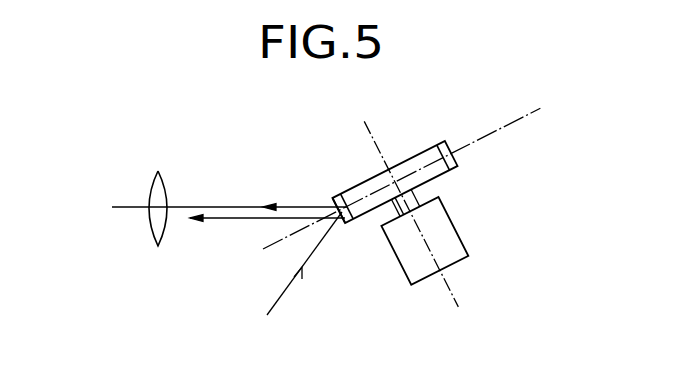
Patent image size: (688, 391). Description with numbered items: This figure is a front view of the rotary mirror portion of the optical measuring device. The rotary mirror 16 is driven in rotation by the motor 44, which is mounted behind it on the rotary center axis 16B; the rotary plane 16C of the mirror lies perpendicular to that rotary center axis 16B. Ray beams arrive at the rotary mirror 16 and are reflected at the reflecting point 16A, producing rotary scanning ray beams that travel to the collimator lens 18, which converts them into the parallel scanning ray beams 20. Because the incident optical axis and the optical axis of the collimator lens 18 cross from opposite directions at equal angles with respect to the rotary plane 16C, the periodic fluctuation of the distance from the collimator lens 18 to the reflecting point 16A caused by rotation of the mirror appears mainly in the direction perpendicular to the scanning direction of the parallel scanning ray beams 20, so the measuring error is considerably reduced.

The rotary mirror 16 is at (446, 172).
The reflecting point 16A is at (340, 196).
The rotary center axis 16B is at (368, 121).
The rotary plane 16C is at (490, 132).
The collimator lens 18 is at (168, 181).
The parallel scanning ray beams 20 is at (120, 207).
The motor 44 is at (456, 234).